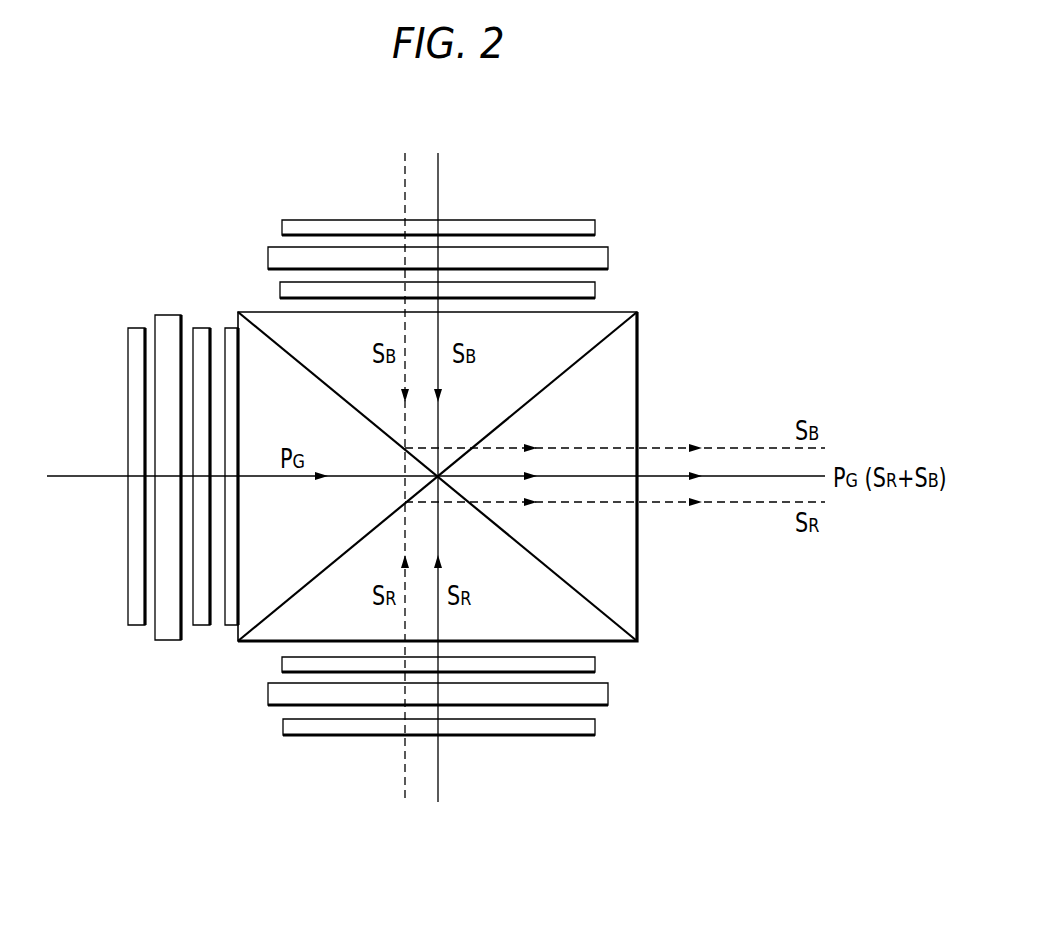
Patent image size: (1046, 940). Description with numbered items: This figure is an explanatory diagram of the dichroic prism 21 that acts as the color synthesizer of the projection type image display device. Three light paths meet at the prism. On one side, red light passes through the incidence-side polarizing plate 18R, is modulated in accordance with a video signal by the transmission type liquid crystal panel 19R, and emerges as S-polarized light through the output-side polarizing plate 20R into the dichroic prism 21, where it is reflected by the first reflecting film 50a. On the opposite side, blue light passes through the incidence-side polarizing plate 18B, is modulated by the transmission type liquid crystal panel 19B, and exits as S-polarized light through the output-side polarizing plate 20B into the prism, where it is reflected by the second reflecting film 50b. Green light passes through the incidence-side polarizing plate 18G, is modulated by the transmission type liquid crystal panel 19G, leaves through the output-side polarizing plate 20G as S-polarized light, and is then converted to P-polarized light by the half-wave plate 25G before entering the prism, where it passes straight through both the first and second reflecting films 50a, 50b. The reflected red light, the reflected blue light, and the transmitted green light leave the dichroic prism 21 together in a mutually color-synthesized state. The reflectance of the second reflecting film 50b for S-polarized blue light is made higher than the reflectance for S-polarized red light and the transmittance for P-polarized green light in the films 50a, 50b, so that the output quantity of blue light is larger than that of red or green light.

The incidence-side polarizing plate 18B is at (282, 231).
The transmission type liquid crystal panel for blue light 19B is at (268, 258).
The output-side polarizing plate 20B is at (280, 290).
The incidence-side polarizing plate 18G is at (134, 627).
The transmission type liquid crystal panel for green light 19G is at (167, 642).
The output-side polarizing plate 20G is at (200, 627).
The half-wave plate 25G is at (232, 627).
The incidence-side polarizing plate 18R is at (595, 727).
The transmission type liquid crystal panel for red light 19R is at (608, 691).
The output-side polarizing plate 20R is at (595, 661).
The dichroic prism 21 is at (618, 310).
The first reflecting film 50a is at (572, 368).
The second reflecting film 50b is at (580, 590).